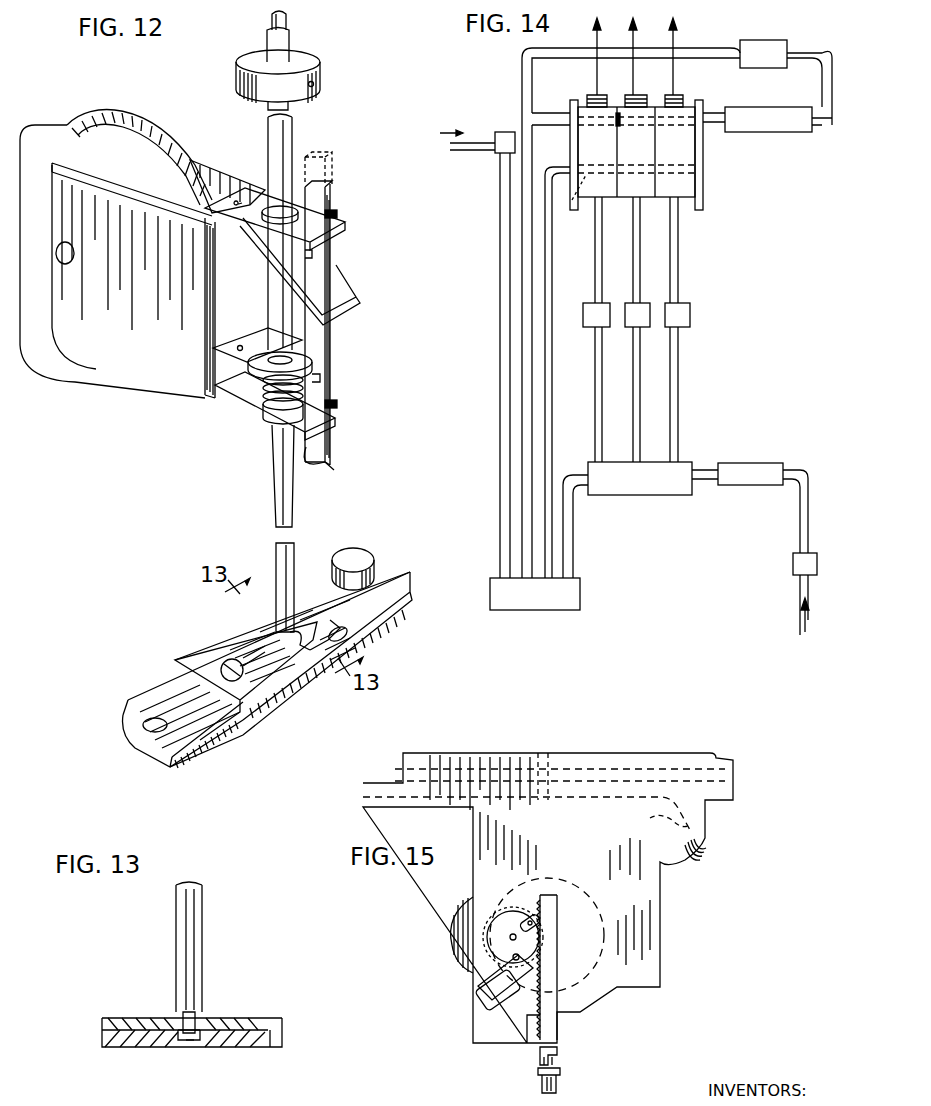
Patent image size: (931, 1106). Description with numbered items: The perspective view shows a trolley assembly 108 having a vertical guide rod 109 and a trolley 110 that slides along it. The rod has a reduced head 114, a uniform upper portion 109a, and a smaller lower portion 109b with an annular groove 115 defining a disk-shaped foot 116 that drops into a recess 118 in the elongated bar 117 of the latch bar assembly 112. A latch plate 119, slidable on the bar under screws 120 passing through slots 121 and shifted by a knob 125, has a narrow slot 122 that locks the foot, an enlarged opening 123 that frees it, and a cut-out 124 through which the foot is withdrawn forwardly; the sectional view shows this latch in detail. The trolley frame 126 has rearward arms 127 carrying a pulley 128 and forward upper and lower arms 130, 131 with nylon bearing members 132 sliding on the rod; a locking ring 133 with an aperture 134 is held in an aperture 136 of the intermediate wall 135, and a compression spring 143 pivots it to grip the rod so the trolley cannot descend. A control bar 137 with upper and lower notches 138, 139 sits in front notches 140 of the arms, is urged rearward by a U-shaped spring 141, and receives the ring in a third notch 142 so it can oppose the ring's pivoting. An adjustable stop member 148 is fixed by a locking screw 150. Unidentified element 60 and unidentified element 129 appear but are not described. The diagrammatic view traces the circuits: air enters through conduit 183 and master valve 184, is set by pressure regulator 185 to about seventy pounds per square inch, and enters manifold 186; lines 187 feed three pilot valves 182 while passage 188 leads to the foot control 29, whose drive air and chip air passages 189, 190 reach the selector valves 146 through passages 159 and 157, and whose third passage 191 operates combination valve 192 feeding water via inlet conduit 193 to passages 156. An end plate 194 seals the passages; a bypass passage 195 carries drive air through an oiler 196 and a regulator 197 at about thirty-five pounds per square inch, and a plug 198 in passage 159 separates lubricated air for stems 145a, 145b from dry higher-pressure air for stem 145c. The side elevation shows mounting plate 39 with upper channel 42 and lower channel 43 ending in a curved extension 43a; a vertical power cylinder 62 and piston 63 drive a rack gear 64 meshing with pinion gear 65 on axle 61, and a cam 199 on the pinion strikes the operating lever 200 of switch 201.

In FIG. 14, the foot control 29 is at (560, 612).
In FIG. 15, the mounting plate 39 is at (660, 906).
In FIG. 15, the upper channel 42 is at (598, 768).
In FIG. 15, the lower channel 43 is at (543, 760).
In FIG. 15, the curved extension 43a is at (652, 818).
In FIG. 15, the boss 60 is at (456, 932).
In FIG. 15, the axle 61 is at (513, 937).
In FIG. 15, the power cylinder 62 is at (561, 1085).
In FIG. 15, the piston 63 is at (558, 1062).
In FIG. 15, the rack gear 64 is at (560, 990).
In FIG. 15, the pinion gear 65 is at (500, 890).
In FIG. 12, the trolley assembly 108 is at (180, 396).
In FIG. 12, the guide rod 109 is at (285, 157).
In FIG. 12, the upper portion of guide rod 109a is at (322, 170).
In FIG. 12, the lower portion of guide rod 109b is at (275, 512).
In FIG. 13, the lower portion of guide rod 109b is at (197, 950).
In FIG. 12, the trolley 110 is at (152, 365).
In FIG. 12, the latch bar assembly 112 is at (212, 745).
In FIG. 13, the latch bar assembly 112 is at (262, 1016).
In FIG. 12, the reduced head portion 114 is at (291, 17).
In FIG. 13, the annular groove 115 is at (179, 1014).
In FIG. 13, the disk-shaped foot 116 is at (178, 1040).
In FIG. 12, the elongated bar 117 is at (232, 726).
In FIG. 13, the elongated bar 117 is at (250, 1037).
In FIG. 12, the recess 118 is at (153, 718).
In FIG. 13, the recess 118 is at (196, 1042).
In FIG. 12, the latch plate 119 is at (388, 560).
In FIG. 13, the latch plate 119 is at (112, 1020).
In FIG. 12, the screws 120 is at (228, 650).
In FIG. 12, the longitudinal slots 121 is at (252, 655).
In FIG. 12, the longitudinal slot 122 is at (300, 614).
In FIG. 13, the longitudinal slot 122 is at (200, 1012).
In FIG. 12, the enlarged opening 123 is at (314, 612).
In FIG. 12, the cut-out 124 is at (348, 636).
In FIG. 12, the knob 125 is at (358, 552).
In FIG. 12, the frame 126 is at (100, 345).
In FIG. 12, the rearwardly extending arms 127 is at (106, 178).
In FIG. 12, the pulley 128 is at (55, 130).
In FIG. 12, the hole 129 is at (75, 250).
In FIG. 12, the upper arm 130 is at (266, 233).
In FIG. 12, the lower arm 131 is at (262, 410).
In FIG. 12, the bearing members 132 is at (246, 228).
In FIG. 12, the locking ring 133 is at (256, 345).
In FIG. 12, the central aperture 134 is at (246, 364).
In FIG. 12, the intermediate wall portion 135 is at (228, 290).
In FIG. 12, the aperture 136 is at (236, 346).
In FIG. 12, the control bar 137 is at (332, 350).
In FIG. 12, the upper notch 138 is at (313, 254).
In FIG. 12, the lower notch 139 is at (326, 465).
In FIG. 12, the front notches 140 is at (338, 213).
In FIG. 12, the U-shaped spring 141 is at (350, 290).
In FIG. 12, the third notch 142 is at (320, 378).
In FIG. 12, the compression spring 143 is at (266, 380).
In FIG. 14, the valve stem 145a is at (635, 94).
In FIG. 14, the valve stem 145b is at (676, 94).
In FIG. 14, the valve stem 145c is at (594, 94).
In FIG. 14, the selector valve 146 is at (680, 157).
In FIG. 12, the stop member 148 is at (310, 62).
In FIG. 12, the locking screw 150 is at (320, 84).
In FIG. 14, the water passage 156 is at (692, 141).
In FIG. 14, the chip air passage 157 is at (578, 205).
In FIG. 14, the drive air passage 159 is at (620, 106).
In FIG. 14, the pilot valves 182 is at (690, 312).
In FIG. 14, the air conduit 183 is at (800, 597).
In FIG. 14, the master valve 184 is at (792, 565).
In FIG. 14, the pressure regulator 185 is at (760, 462).
In FIG. 14, the manifold 186 is at (647, 494).
In FIG. 14, the air lines 187 is at (595, 391).
In FIG. 14, the passage 188 is at (574, 548).
In FIG. 14, the drive air passage 189 is at (528, 284).
In FIG. 14, the chip air passage 190 is at (553, 340).
In FIG. 14, the third passage 191 is at (500, 316).
In FIG. 14, the combination valve 192 is at (504, 130).
In FIG. 14, the water inlet conduit 193 is at (480, 140).
In FIG. 14, the end plate 194 is at (705, 202).
In FIG. 14, the bypass passage 195 is at (566, 58).
In FIG. 14, the oiler 196 is at (769, 40).
In FIG. 14, the pressure regulator 197 is at (788, 133).
In FIG. 14, the plug 198 is at (614, 118).
In FIG. 15, the cam 199 is at (535, 922).
In FIG. 15, the operating lever 200 is at (478, 984).
In FIG. 15, the switch 201 is at (482, 1000).